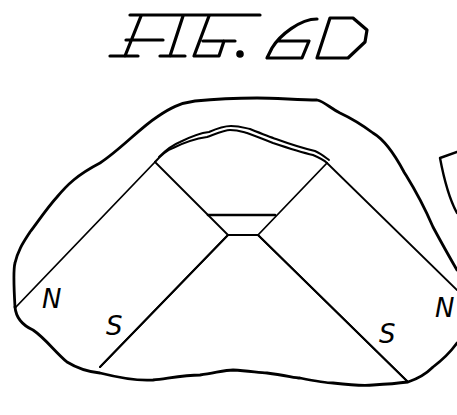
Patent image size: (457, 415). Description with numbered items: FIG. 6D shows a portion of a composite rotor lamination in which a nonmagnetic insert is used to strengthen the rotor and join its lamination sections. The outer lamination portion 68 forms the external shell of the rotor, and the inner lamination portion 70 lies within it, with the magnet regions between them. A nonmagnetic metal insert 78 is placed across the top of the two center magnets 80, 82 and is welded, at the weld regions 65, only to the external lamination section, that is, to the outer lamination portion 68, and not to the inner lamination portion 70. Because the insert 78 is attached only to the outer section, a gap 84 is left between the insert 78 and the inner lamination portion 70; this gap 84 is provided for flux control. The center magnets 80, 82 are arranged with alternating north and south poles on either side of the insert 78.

The inner boundary line of magnet ring 65 is at (265, 137).
The outer shell 68 is at (383, 170).
The bottom magnet segment 70 is at (207, 352).
The top magnet segment 78 is at (260, 195).
The left magnet segment 80 is at (157, 271).
The right magnet segment 82 is at (377, 272).
The center joint 84 is at (245, 222).